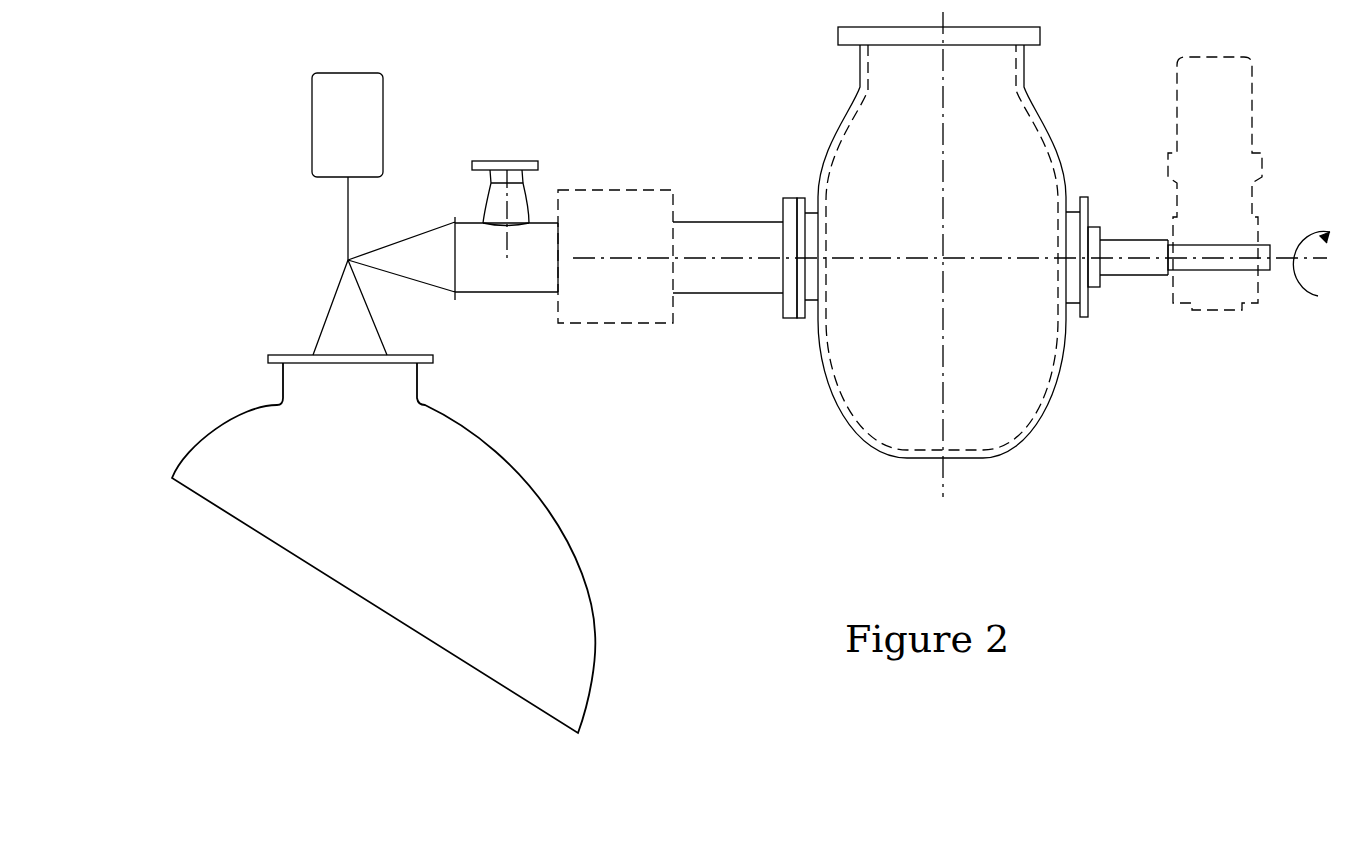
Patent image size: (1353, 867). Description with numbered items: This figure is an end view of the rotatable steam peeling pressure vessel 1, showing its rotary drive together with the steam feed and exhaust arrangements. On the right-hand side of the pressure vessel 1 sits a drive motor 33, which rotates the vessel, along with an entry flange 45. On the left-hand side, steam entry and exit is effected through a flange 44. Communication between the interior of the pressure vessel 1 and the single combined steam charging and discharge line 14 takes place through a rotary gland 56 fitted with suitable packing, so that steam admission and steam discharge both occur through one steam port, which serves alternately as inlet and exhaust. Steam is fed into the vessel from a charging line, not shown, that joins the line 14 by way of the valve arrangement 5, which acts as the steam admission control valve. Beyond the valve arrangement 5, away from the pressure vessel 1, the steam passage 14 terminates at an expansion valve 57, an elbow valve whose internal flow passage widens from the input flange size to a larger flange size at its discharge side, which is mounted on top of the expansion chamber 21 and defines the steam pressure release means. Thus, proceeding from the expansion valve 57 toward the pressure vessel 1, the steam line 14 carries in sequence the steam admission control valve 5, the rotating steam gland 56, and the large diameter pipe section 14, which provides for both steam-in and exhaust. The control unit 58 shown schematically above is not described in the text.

The pressure vessel 1 is at (1030, 425).
The valve arrangement 5 is at (508, 168).
The steam line 14 is at (722, 233).
The expansion chamber 21 is at (557, 543).
The drive motor 33 is at (1197, 128).
The flange 44 is at (790, 317).
The entry flange 45 is at (1088, 312).
The rotary gland 56 is at (633, 312).
The expansion valve 57 is at (332, 335).
The control unit 58 is at (323, 122).